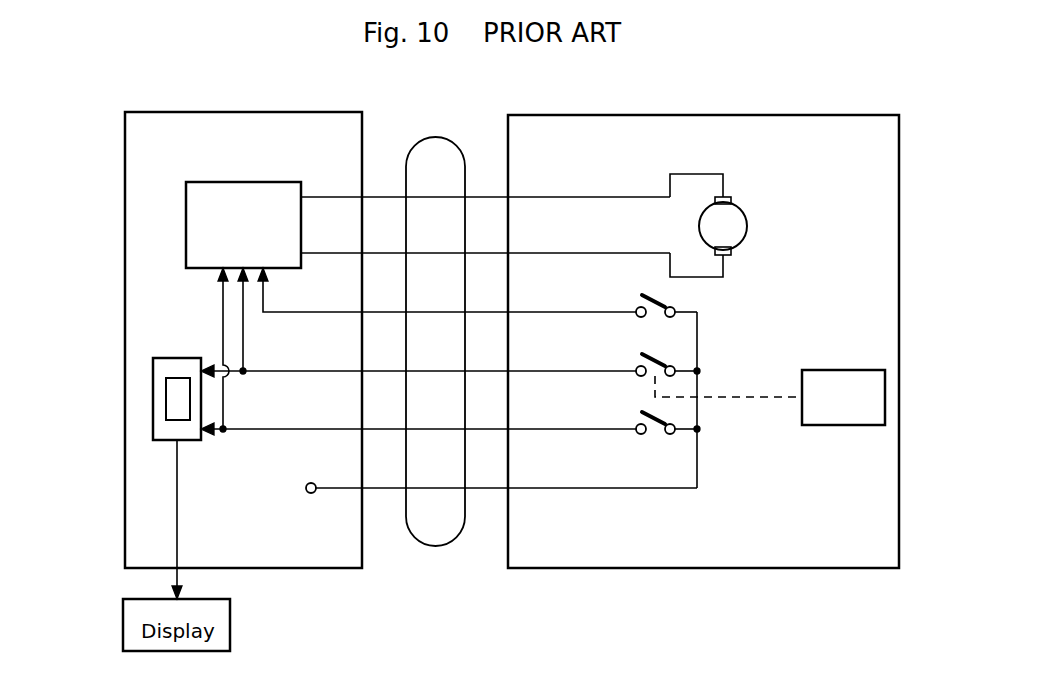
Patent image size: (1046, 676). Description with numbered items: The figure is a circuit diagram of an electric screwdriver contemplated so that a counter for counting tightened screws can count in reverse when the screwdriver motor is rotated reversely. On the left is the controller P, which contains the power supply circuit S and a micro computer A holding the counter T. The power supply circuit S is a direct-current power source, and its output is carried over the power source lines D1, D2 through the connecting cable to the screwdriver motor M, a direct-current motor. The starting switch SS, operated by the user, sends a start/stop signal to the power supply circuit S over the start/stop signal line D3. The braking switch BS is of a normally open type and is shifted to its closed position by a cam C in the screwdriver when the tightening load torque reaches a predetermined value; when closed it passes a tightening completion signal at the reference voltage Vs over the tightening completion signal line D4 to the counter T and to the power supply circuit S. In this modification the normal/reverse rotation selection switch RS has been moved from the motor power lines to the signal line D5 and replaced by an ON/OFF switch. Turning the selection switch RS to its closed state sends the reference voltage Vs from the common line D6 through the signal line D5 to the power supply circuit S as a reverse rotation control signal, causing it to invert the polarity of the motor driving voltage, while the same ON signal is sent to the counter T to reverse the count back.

The controller P is at (320, 112).
The power supply circuit S is at (283, 181).
The micro computer A is at (153, 385).
The counter T is at (166, 413).
The power source line D1 is at (589, 197).
The power source line D2 is at (587, 253).
The start/stop signal line D3 is at (586, 312).
The tightening completion signal line D4 is at (585, 371).
The signal line D5 is at (585, 429).
The common line D6 is at (585, 488).
The starting switch SS is at (634, 301).
The braking switch BS is at (633, 360).
The normal/reverse rotation selection switch RS is at (633, 418).
The cam C is at (843, 427).
The screwdriver motor M is at (708, 225).
The reference voltage Vs is at (289, 489).